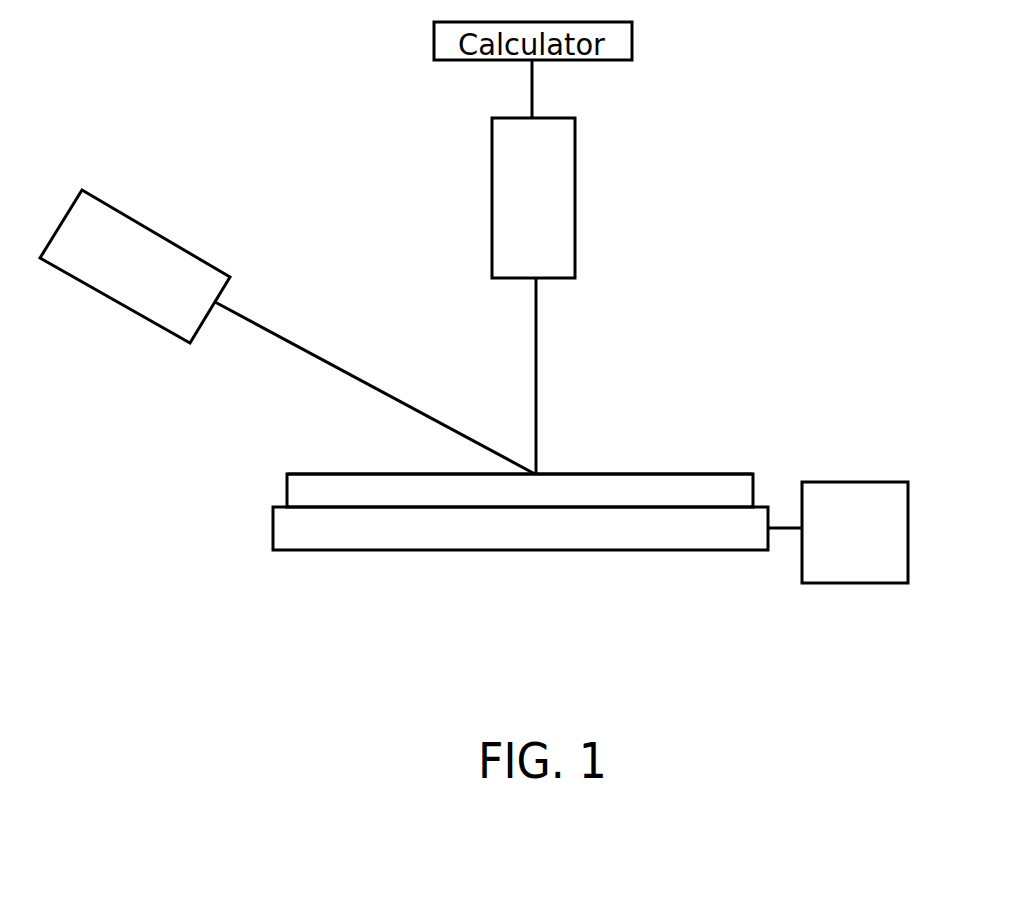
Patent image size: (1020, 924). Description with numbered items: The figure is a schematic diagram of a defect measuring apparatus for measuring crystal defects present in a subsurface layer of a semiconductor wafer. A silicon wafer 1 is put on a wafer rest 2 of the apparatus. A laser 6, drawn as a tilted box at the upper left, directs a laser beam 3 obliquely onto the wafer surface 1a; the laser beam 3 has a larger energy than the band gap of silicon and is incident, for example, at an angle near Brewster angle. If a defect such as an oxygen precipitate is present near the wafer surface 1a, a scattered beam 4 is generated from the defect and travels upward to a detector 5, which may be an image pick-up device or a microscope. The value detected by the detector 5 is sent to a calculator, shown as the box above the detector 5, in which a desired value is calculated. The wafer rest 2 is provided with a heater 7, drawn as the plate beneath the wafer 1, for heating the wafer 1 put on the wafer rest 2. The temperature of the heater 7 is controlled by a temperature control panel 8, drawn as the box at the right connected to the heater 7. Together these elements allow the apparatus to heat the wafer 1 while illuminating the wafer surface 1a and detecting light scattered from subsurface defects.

The silicon wafer 1 is at (735, 480).
The wafer surface 1a is at (323, 473).
The wafer rest 2 is at (648, 380).
The laser beam 3 is at (357, 376).
The scattered beam 4 is at (537, 378).
The detector 5 is at (575, 193).
The laser 6 is at (118, 303).
The heater 7 is at (437, 552).
The temperature control panel 8 is at (855, 583).